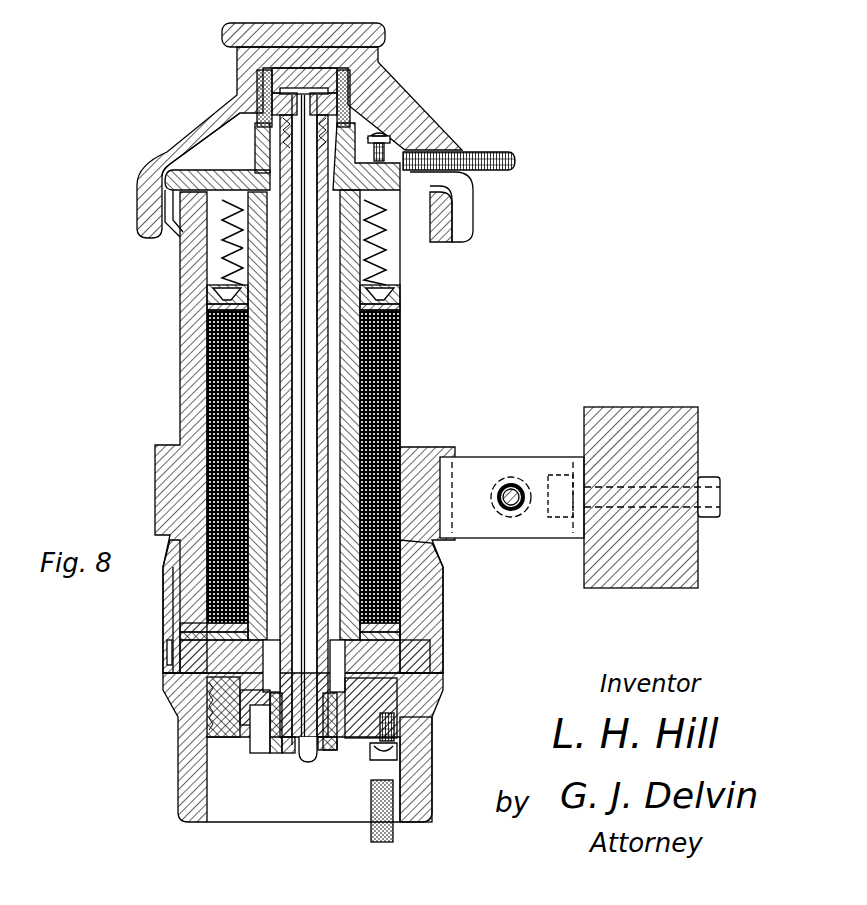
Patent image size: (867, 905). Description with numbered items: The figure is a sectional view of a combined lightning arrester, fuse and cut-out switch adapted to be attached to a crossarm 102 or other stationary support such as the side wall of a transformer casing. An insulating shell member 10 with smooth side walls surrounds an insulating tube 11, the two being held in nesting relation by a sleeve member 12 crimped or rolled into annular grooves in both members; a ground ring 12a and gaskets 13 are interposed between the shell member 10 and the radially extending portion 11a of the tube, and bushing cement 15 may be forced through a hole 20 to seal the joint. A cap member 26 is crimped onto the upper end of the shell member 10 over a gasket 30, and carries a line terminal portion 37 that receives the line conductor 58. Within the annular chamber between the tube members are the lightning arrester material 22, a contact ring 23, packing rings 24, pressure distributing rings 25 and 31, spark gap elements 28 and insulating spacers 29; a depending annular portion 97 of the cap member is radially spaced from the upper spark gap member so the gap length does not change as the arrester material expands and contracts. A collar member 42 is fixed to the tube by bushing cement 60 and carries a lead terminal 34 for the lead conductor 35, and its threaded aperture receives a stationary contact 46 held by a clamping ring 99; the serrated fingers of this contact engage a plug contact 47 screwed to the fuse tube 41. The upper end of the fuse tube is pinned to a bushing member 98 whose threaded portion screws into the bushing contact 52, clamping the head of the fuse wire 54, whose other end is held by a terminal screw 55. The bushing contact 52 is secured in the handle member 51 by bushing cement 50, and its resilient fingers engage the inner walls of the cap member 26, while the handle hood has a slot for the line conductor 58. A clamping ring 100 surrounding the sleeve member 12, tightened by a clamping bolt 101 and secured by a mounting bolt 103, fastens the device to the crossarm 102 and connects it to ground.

The handle member 51 is at (306, 30).
The bushing contact 52 is at (360, 68).
The bushing cement 50 is at (345, 96).
The line terminal portion 37 is at (393, 131).
The line conductor 58 is at (490, 152).
The bushing member 98 is at (262, 120).
The cap member 26 is at (190, 172).
The fuse tube 41 is at (255, 160).
The gasket 30 is at (432, 193).
The depending annular portion 97 is at (236, 218).
The spark gap elements 28 is at (238, 276).
The insulating spacers 29 is at (372, 262).
The pressure distributing ring 31 is at (212, 291).
The pressure distributing ring 25 is at (398, 288).
The packing rings 24 is at (395, 298).
The contact ring 23 is at (400, 310).
The insulating tube 11 is at (341, 356).
The insulating shell member 10 is at (430, 366).
The lightning arrester material 22 is at (400, 421).
The clamping ring 100 is at (498, 462).
The clamping bolt 101 is at (518, 508).
The crossarm 102 is at (699, 574).
The mounting bolt 103 is at (720, 498).
The sleeve member 12 is at (445, 600).
The gaskets 13 is at (420, 633).
The bushing cement 15 is at (172, 607).
The ground ring 12a is at (180, 636).
The hole 20 is at (166, 665).
The bushing cement 60 is at (207, 718).
The collar member 42 is at (222, 736).
The clamping ring 99 is at (250, 736).
The stationary contact 46 is at (272, 752).
The plug contact 47 is at (287, 754).
The fuse wire 54 is at (309, 763).
The terminal screw 55 is at (330, 752).
The lead terminal 34 is at (374, 768).
The lead conductor 35 is at (394, 836).
The radially extending portion 11a is at (426, 742).